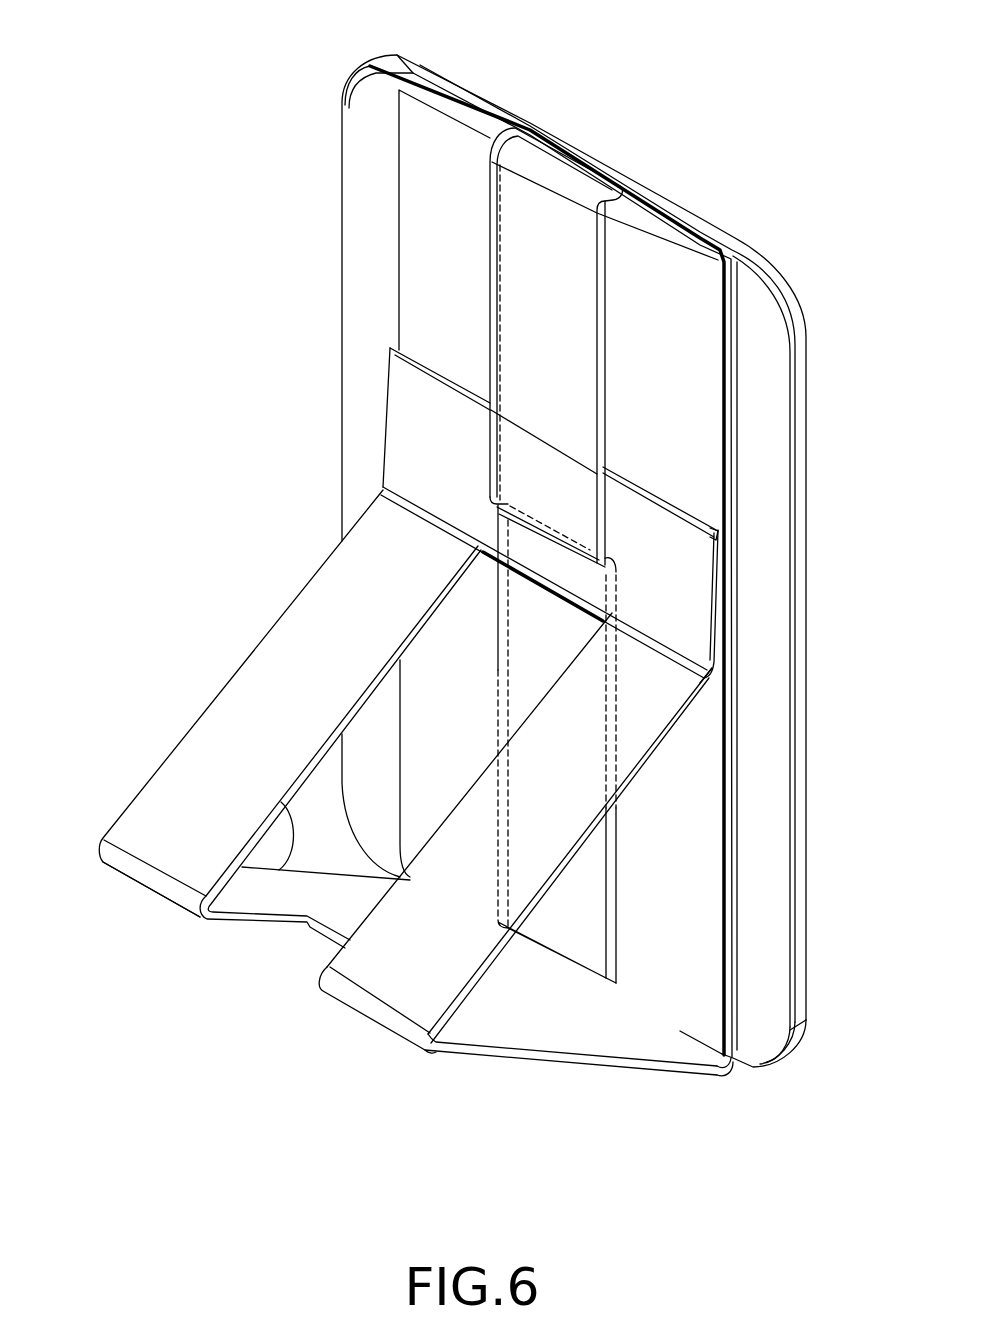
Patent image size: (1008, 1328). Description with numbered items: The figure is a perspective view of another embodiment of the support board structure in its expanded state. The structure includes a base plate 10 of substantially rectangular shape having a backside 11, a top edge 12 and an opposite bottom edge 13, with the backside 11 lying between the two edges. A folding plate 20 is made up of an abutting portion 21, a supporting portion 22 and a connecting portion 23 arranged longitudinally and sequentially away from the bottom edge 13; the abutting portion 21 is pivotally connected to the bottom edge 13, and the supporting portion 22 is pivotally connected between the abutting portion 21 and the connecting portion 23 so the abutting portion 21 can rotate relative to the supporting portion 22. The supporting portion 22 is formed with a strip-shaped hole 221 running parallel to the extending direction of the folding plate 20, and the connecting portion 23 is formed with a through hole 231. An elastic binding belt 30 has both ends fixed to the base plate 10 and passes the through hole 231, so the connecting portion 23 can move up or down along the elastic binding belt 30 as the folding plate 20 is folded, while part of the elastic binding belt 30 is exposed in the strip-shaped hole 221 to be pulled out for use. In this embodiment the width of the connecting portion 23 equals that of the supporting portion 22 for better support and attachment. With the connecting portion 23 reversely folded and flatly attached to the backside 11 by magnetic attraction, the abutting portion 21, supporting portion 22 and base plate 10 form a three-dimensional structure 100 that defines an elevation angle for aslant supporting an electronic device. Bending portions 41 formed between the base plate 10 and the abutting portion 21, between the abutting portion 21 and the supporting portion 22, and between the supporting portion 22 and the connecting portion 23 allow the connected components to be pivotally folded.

The three-dimensional structure 100 is at (600, 1102).
The base plate 10 is at (343, 173).
The backside 11 is at (373, 287).
The top edge 12 is at (463, 107).
The bottom edge 13 is at (753, 1070).
The elastic binding belt 30 is at (615, 268).
The folding plate 20 is at (120, 802).
The abutting portion 21 is at (510, 1013).
The supporting portion 22 is at (223, 733).
The strip-shaped hole 221 is at (286, 870).
The connecting portion 23 is at (417, 440).
The through hole 231 is at (483, 553).
The bending portion 41 is at (366, 1004).